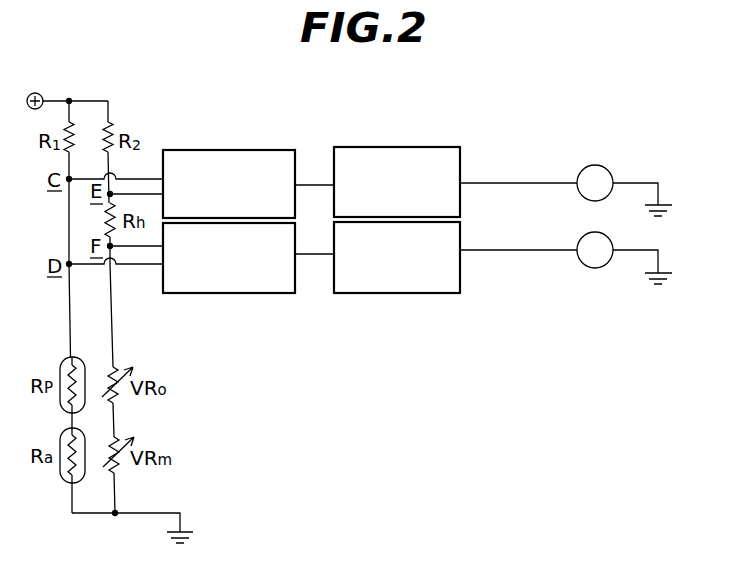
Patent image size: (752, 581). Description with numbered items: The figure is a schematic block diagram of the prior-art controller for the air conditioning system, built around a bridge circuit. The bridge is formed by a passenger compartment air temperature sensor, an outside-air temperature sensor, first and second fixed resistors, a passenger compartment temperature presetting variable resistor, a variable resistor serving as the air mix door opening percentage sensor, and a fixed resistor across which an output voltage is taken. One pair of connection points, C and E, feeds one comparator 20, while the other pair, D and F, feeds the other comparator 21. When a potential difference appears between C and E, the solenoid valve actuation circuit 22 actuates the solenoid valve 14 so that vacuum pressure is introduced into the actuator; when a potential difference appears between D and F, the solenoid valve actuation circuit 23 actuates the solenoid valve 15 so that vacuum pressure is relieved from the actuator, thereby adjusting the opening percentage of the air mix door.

The solenoid valve 14 is at (597, 165).
The solenoid valve 15 is at (597, 268).
The comparator 20 is at (228, 150).
The comparator 21 is at (228, 293).
The solenoid valve actuation circuit 22 is at (392, 147).
The solenoid valve actuation circuit 23 is at (397, 293).